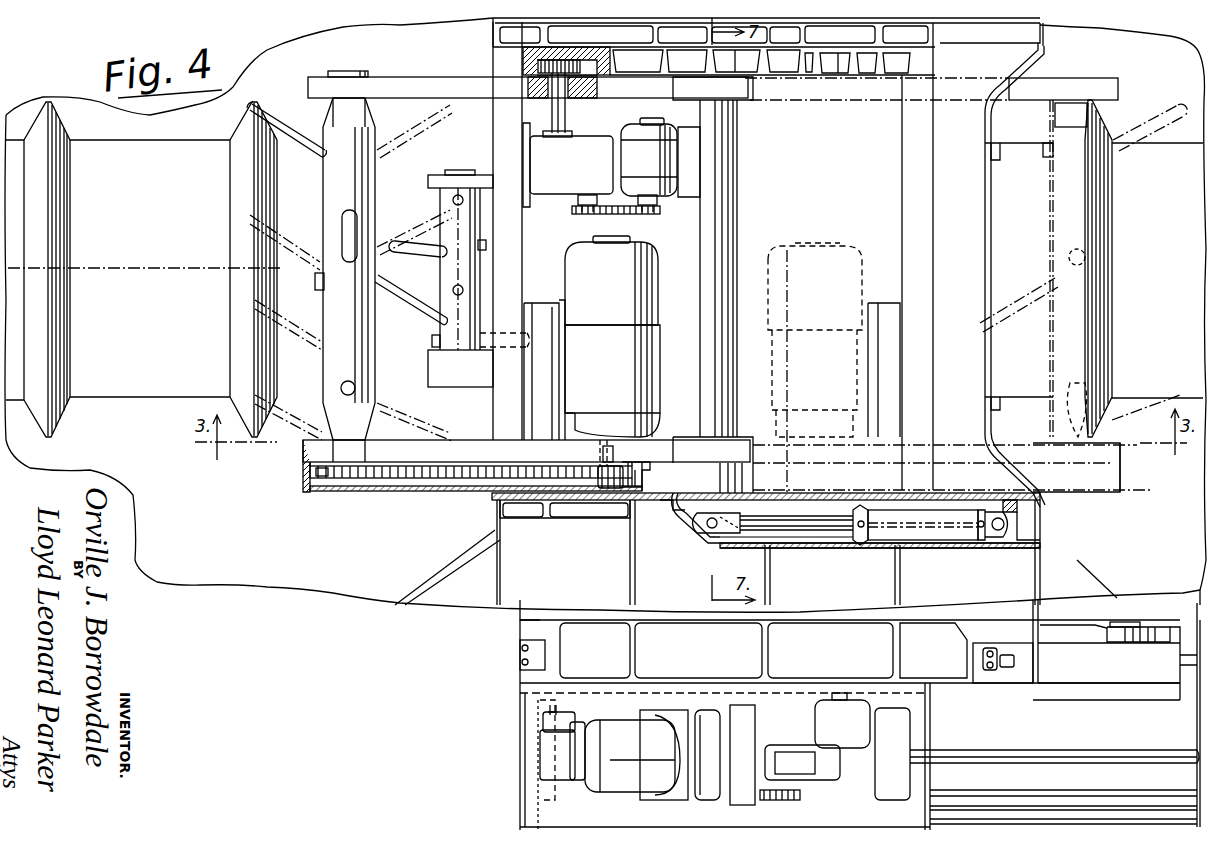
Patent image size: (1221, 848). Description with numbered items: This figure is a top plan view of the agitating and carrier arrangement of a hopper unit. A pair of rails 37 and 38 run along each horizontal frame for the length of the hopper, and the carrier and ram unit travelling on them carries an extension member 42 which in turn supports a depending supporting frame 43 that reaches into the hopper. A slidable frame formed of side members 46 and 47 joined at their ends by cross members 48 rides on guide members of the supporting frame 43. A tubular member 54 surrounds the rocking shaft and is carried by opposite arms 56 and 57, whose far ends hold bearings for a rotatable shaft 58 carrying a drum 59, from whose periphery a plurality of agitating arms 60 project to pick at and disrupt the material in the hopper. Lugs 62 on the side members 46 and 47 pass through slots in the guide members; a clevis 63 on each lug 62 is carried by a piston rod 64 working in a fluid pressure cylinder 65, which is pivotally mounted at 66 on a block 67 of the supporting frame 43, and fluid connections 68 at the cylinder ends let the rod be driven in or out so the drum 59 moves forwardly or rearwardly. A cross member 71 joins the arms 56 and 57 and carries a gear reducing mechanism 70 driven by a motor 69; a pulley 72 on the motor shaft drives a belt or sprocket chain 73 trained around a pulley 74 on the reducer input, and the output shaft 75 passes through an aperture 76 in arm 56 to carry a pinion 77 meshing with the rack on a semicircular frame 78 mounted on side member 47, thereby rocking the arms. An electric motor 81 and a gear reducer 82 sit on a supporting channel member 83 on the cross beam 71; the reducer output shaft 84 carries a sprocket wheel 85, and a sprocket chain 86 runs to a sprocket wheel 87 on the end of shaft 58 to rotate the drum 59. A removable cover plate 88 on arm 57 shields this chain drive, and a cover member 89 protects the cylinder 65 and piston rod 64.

The rail 37 is at (1128, 812).
The rail 38 is at (1186, 661).
The extension member 42 is at (1148, 632).
The supporting frame 43 is at (850, 695).
The side member 46 is at (583, 520).
The side member 47 is at (630, 35).
The cross member 48 is at (500, 64).
The tubular member 54 is at (735, 228).
The arm 56 is at (610, 87).
The arm 57 is at (456, 452).
The rotatable shaft 58 is at (353, 74).
The drum 59 is at (326, 190).
The agitating arm 60 is at (280, 105).
The lug 62 is at (700, 512).
The clevis 63 is at (732, 530).
The piston rod 64 is at (798, 530).
The fluid pressure cylinder 65 is at (926, 540).
The pivotal mounting 66 is at (998, 532).
The block 67 is at (1017, 536).
The fluid connection 68 is at (864, 535).
The motor 69 is at (680, 186).
The gear reducing mechanism 70 is at (551, 180).
The cross member 71 is at (496, 160).
The pulley 72 is at (637, 212).
The belt or sprocket chain 73 is at (605, 213).
The pulley 74 is at (587, 212).
The output shaft 75 is at (560, 118).
The aperture 76 is at (526, 91).
The pinion 77 is at (565, 60).
The semicircular frame 78 is at (792, 70).
The electric motor 81 is at (660, 265).
The gear reducer 82 is at (618, 425).
The supporting channel member 83 is at (540, 302).
The output shaft 84 is at (622, 455).
The sprocket wheel 85 is at (625, 486).
The sprocket chain 86 is at (522, 478).
The sprocket wheel 87 is at (322, 478).
The removable cover plate 88 is at (402, 492).
The cover member 89 is at (831, 548).